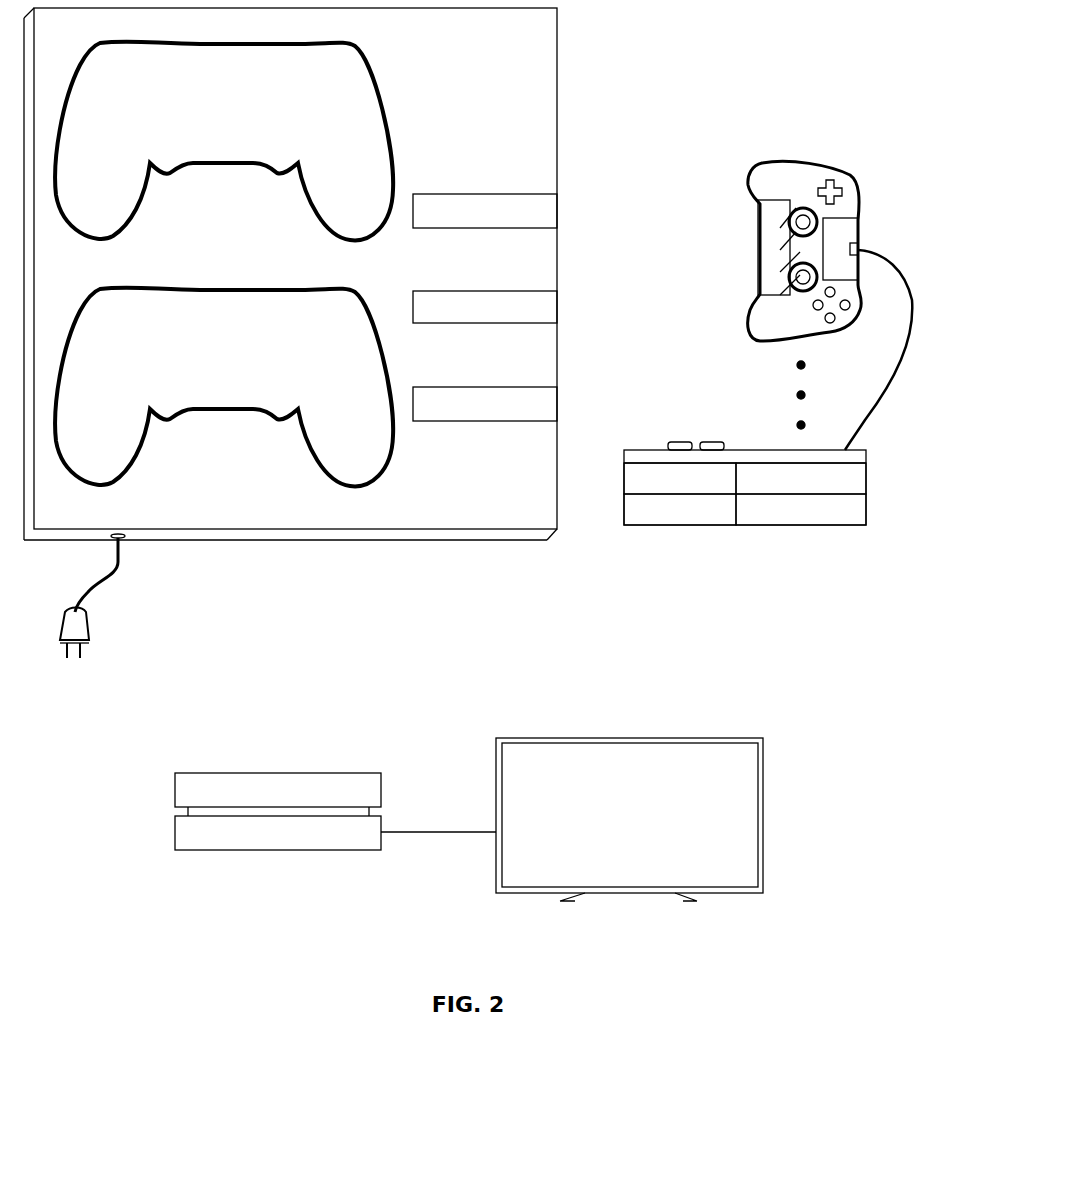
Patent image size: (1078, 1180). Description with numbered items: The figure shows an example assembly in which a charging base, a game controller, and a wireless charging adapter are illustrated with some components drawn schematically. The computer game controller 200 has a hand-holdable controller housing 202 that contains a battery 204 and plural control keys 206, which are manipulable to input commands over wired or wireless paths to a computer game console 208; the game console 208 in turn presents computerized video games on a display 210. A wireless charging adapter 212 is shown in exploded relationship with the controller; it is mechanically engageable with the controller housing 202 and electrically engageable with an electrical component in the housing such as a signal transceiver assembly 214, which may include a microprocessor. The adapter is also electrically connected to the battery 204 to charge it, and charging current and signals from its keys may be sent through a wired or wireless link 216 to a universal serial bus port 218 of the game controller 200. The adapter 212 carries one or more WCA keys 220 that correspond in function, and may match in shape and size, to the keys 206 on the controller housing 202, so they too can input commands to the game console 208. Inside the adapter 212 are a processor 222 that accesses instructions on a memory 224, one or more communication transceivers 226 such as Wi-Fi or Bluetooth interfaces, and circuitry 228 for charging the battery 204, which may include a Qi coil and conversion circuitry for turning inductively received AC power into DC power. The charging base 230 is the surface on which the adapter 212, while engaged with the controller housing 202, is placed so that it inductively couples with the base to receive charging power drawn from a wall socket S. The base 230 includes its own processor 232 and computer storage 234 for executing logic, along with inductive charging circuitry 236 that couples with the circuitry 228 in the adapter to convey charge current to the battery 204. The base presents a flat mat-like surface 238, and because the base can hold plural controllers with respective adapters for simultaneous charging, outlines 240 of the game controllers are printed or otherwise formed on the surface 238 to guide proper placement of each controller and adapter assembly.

The computer game controller 200 is at (766, 98).
The controller housing 202 is at (760, 172).
The battery 204 is at (874, 168).
The control keys 206 is at (833, 320).
The computer game console 208 is at (337, 771).
The display 210 is at (722, 738).
The wireless charging adapter 212 is at (866, 450).
The signal transceiver assembly 214 is at (758, 212).
The wired or wireless link 216 is at (908, 262).
The universal serial bus port 218 is at (858, 248).
The WCA keys 220 is at (672, 443).
The processor 222 is at (626, 514).
The memory 224 is at (866, 514).
The communication transceiver 226 is at (866, 482).
The charging circuitry 228 is at (626, 482).
The charging base 230 is at (557, 58).
The processor 232 is at (553, 207).
The computer storage 234 is at (553, 303).
The inductive charging circuitry 236 is at (553, 399).
The flat mat-like surface 238 is at (450, 485).
The outlines 240 is at (387, 138).
The wall socket S is at (92, 632).